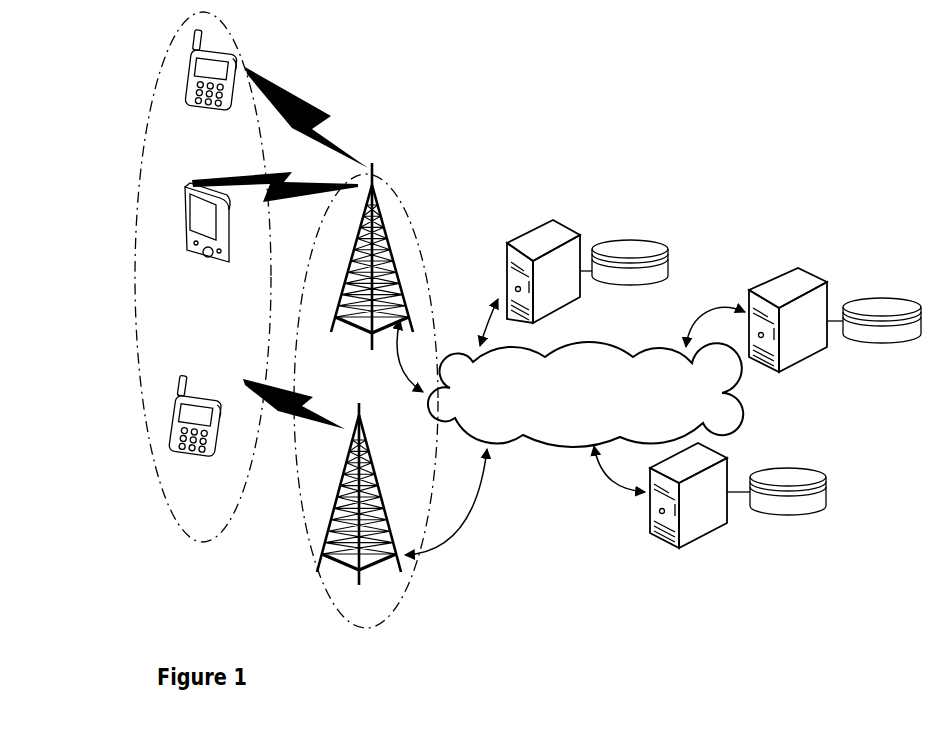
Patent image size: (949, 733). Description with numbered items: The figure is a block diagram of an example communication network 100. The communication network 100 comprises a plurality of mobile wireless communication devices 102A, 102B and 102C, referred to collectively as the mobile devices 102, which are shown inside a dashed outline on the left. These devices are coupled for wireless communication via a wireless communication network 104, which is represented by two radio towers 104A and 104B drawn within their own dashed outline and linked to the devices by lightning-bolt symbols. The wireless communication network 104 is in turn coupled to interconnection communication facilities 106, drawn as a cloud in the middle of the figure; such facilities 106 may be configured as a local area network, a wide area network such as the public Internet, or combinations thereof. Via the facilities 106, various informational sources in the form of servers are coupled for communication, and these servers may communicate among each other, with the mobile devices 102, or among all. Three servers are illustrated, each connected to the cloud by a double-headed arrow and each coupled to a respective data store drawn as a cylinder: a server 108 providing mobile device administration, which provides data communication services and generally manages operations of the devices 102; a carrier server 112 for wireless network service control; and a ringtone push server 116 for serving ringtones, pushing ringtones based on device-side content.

The communication network 100 is at (650, 118).
The mobile wireless communication devices 102 is at (142, 407).
The mobile wireless communication device 102A is at (217, 113).
The mobile wireless communication device 102B is at (192, 262).
The mobile wireless communication device 102C is at (202, 463).
The wireless communication network 104 is at (376, 385).
The radio tower 104A is at (388, 259).
The radio tower 104B is at (365, 573).
The interconnection communication facilities 106 is at (577, 404).
The server providing mobile device administration (MDAS) 108 is at (650, 514).
The carrier server 112 is at (587, 289).
The ringtone push server 116 is at (780, 290).